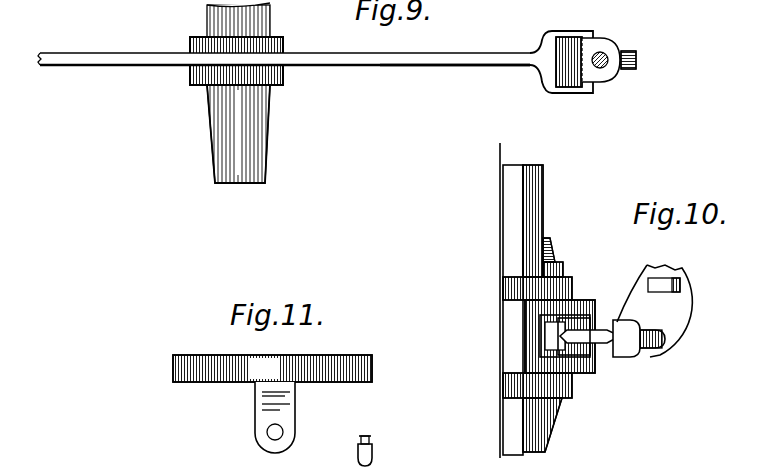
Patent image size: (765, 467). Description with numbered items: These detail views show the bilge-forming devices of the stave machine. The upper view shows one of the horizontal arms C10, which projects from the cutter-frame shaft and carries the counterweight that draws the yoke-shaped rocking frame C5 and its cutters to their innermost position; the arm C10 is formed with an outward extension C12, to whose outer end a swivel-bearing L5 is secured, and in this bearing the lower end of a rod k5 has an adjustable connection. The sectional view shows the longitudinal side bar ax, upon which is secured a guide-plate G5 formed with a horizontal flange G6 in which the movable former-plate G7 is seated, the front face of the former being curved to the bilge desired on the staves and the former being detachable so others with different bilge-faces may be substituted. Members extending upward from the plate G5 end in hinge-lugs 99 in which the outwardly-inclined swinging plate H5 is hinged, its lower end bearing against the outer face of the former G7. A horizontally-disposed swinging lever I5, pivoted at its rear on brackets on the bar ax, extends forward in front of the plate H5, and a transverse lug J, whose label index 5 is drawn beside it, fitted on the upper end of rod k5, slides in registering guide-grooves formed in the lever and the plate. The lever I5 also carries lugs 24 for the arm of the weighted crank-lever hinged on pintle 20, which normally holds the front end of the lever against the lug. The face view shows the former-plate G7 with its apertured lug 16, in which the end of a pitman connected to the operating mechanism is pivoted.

In FIG. 9, the rocking frame C5 is at (214, 98).
In FIG. 9, the horizontal arm C10 is at (284, 71).
In FIG. 9, the outward extension C12 is at (455, 78).
In FIG. 9, the swivel-bearing L5 is at (601, 45).
In FIG. 11, the swivel-bearing L5 is at (357, 455).
In FIG. 9, the rod k5 is at (624, 54).
In FIG. 11, the rod k5 is at (372, 450).
In FIG. 10, the longitudinal side bar ax is at (481, 300).
In FIG. 10, the guide-plate G5 is at (516, 218).
In FIG. 10, the horizontal flange G6 is at (534, 198).
In FIG. 10, the pintle 20 is at (564, 270).
In FIG. 10, the hinge-lugs 99 is at (571, 289).
In FIG. 10, the transverse lug J is at (599, 331).
In FIG. 10, the transverse lug label index 5 is at (596, 313).
In FIG. 10, the swinging plate H5 is at (580, 356).
In FIG. 10, the swinging lever I5 is at (652, 311).
In FIG. 10, the lugs 24 is at (681, 284).
In FIG. 10, the former-plate G7 is at (556, 414).
In FIG. 11, the former-plate G7 is at (215, 353).
In FIG. 11, the apertured lug 16 is at (289, 417).